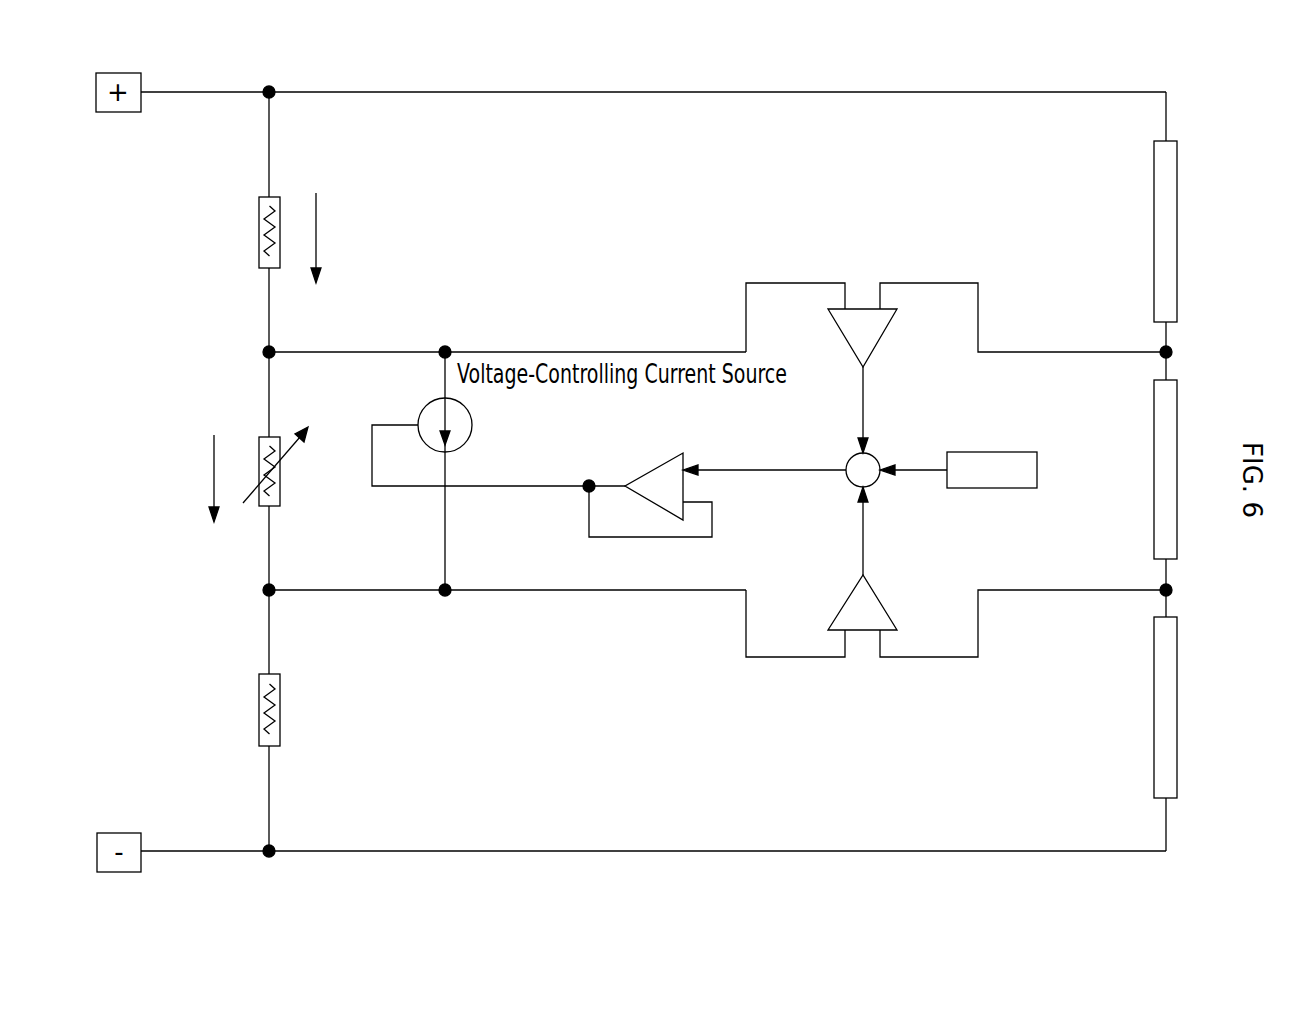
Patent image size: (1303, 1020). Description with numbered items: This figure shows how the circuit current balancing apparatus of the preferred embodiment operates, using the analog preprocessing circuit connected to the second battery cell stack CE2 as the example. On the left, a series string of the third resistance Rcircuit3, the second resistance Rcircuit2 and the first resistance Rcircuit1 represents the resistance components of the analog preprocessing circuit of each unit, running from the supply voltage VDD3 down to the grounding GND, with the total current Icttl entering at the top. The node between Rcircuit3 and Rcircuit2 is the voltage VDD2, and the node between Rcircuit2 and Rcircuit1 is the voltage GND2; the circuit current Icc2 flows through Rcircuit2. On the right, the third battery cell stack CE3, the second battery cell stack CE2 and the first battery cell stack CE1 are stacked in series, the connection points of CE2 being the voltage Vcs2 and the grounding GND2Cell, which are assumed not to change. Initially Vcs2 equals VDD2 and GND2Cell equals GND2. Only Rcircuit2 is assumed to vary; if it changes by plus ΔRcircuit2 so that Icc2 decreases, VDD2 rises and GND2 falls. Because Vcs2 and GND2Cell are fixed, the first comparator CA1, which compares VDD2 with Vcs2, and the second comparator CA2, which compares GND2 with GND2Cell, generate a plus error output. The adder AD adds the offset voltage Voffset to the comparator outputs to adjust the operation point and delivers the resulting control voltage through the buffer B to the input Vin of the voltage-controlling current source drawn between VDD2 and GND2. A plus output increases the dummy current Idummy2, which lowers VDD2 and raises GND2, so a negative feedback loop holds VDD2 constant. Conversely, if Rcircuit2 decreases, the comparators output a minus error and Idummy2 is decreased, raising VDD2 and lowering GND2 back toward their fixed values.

The voltage VDD3 is at (271, 124).
The third resistance Rcircuit3 is at (221, 274).
The total circuit current Icctt1 Icttl is at (339, 226).
The voltage VDD2 is at (481, 377).
The second resistance Rcircuit2 is at (187, 508).
The circuit current Icc2 is at (214, 460).
The voltage GND2 is at (481, 616).
The first resistance Rcircuit1 is at (221, 762).
The grounding GND is at (269, 872).
The dummy current Idummy2 is at (463, 471).
The input voltage Vin is at (463, 455).
The buffer B is at (647, 481).
The adder AD is at (781, 463).
The offset voltage Voffset is at (958, 470).
The first comparator CA1 is at (956, 351).
The second comparator CA2 is at (956, 590).
The third battery cell stack CE3 is at (1144, 236).
The voltage Vcs2 is at (1137, 367).
The second battery cell stack CE2 is at (1144, 498).
The grounding GND2Cell is at (1119, 605).
The first battery cell stack CE1 is at (1144, 734).